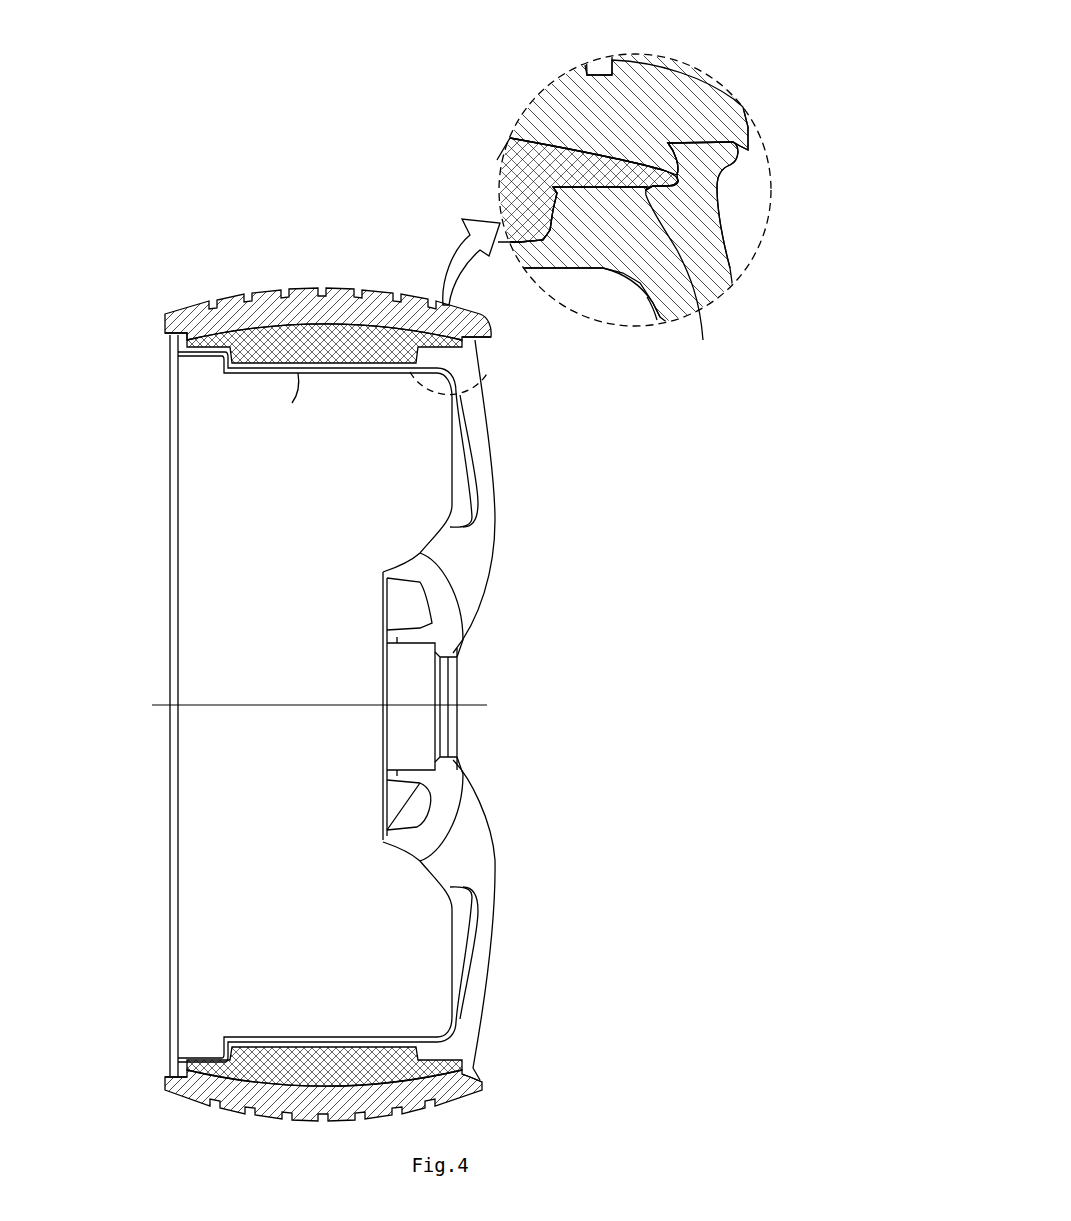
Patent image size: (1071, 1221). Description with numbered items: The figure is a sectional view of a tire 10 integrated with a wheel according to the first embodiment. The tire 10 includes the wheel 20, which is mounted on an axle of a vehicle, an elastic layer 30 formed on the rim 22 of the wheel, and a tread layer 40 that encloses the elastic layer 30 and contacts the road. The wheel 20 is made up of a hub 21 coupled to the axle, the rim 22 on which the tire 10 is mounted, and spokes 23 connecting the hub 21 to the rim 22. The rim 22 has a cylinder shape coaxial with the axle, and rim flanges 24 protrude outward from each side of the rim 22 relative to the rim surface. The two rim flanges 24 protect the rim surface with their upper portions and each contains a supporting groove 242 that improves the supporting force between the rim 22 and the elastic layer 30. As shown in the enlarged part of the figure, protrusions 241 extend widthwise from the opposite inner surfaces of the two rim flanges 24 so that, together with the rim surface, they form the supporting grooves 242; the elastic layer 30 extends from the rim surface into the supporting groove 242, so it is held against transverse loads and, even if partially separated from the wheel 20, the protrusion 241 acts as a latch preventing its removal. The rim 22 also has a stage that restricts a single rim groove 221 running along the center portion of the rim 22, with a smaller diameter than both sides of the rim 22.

The tire 10 is at (618, 692).
The wheel 20 is at (498, 523).
The hub 21 is at (453, 636).
The rim 22 is at (277, 373).
The rim groove 221 is at (291, 403).
The spokes 23 is at (480, 458).
The rim flanges 24 is at (157, 353).
The protrusions 241 is at (677, 155).
The supporting groove 242 is at (703, 340).
The elastic layer 30 is at (295, 347).
The tread layer 40 is at (347, 313).